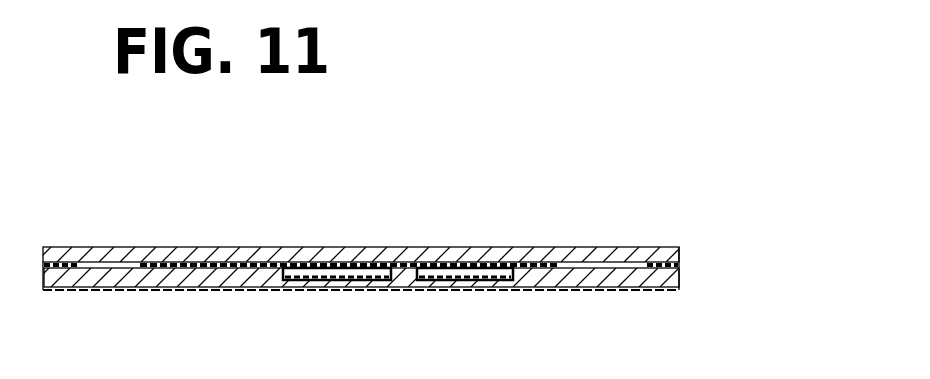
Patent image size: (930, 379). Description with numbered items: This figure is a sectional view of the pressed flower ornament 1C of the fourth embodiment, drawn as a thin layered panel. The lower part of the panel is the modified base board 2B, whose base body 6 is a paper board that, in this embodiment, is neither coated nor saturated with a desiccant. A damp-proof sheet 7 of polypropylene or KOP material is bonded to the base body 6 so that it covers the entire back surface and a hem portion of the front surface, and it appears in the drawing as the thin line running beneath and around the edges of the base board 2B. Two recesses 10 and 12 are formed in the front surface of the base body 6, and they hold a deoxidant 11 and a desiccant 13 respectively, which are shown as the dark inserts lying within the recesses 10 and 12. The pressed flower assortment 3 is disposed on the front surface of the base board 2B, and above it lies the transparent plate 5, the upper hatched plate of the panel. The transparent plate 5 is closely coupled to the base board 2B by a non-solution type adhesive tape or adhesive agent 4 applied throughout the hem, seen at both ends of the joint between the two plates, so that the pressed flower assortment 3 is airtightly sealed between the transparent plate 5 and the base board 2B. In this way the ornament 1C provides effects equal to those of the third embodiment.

The pressed flower ornament 1C is at (683, 194).
The lower substrate 2B is at (215, 290).
The pressed flower assortment 3 is at (190, 262).
The adhesive tape or adhesive agent 4 is at (75, 262).
The transparent plate 5 is at (425, 248).
The base body 6 is at (535, 285).
The damp-proof sheet 7 is at (607, 290).
The recess 10 is at (315, 283).
The deoxidant 11 is at (352, 287).
The recess 12 is at (435, 283).
The desiccant 13 is at (482, 283).